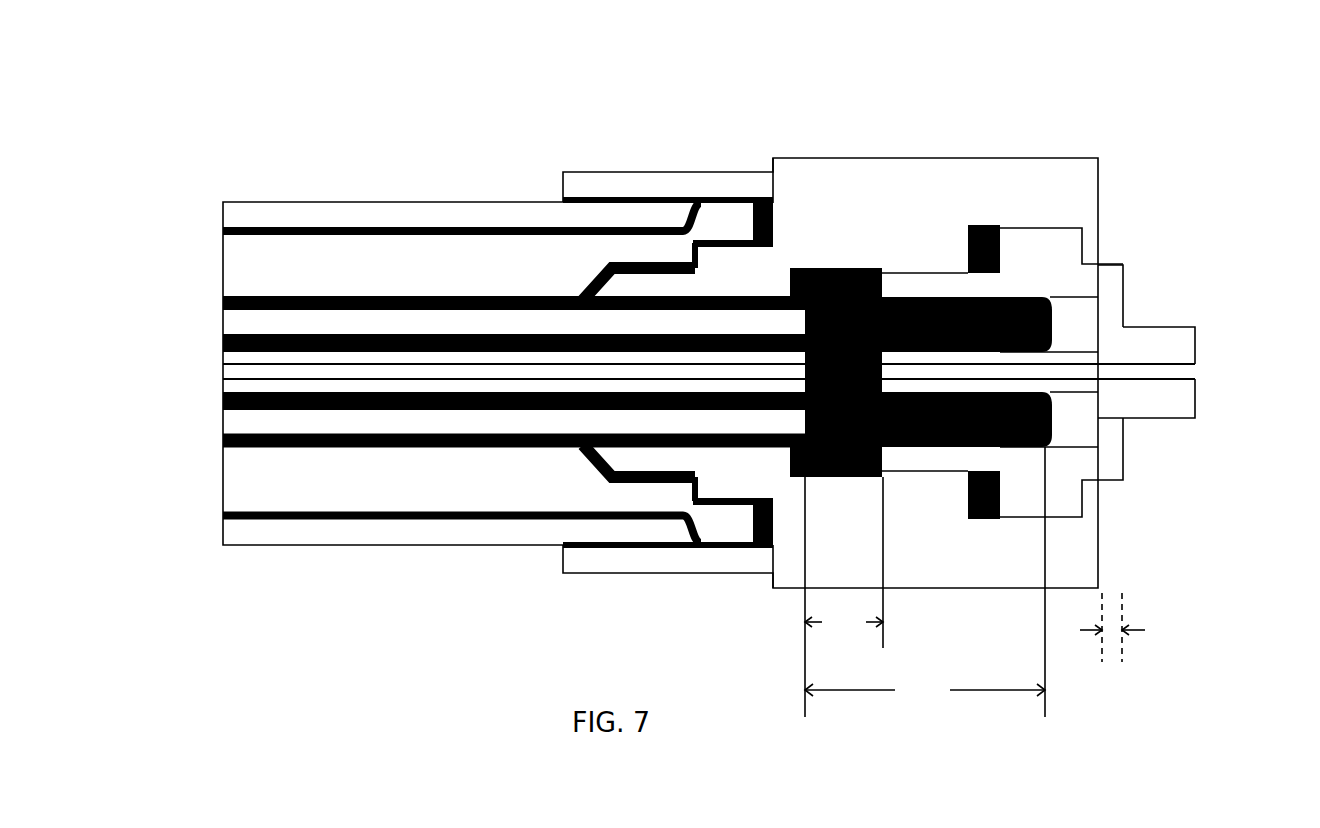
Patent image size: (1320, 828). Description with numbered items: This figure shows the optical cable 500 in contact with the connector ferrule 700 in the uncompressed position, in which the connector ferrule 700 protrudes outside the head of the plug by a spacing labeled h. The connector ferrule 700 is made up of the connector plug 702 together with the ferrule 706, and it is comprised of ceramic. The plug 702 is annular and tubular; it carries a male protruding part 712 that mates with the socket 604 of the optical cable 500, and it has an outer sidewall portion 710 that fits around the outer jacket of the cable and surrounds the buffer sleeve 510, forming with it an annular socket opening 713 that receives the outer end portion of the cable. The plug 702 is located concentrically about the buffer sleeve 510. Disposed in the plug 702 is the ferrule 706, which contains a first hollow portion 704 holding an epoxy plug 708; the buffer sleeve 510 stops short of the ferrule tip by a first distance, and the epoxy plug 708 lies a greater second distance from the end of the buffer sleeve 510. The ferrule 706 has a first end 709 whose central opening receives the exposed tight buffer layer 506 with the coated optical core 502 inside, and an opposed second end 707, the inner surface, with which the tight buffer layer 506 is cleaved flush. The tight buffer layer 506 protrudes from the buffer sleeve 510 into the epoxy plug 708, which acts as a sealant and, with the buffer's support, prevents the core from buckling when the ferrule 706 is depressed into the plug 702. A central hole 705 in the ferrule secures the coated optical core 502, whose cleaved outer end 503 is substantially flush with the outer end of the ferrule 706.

The optical cable 500 is at (290, 148).
The coated optical core 502 is at (1195, 378).
The cleaved outer end 503 is at (1175, 372).
The tight buffer layer 506 is at (232, 356).
The buffer sleeve 510 is at (245, 318).
The socket 604 is at (608, 280).
The connector ferrule 700 is at (992, 118).
The connector plug 702 is at (808, 168).
The first hollow portion 704 is at (1010, 320).
The central hole 705 is at (1127, 377).
The ferrule 706 is at (1196, 338).
The second end 707 is at (1099, 418).
The epoxy plug 708 is at (1121, 275).
The first end 709 is at (880, 457).
The outer sidewall portion 710 is at (600, 170).
The male protruding part 712 is at (715, 265).
The annular socket opening 713 is at (695, 530).